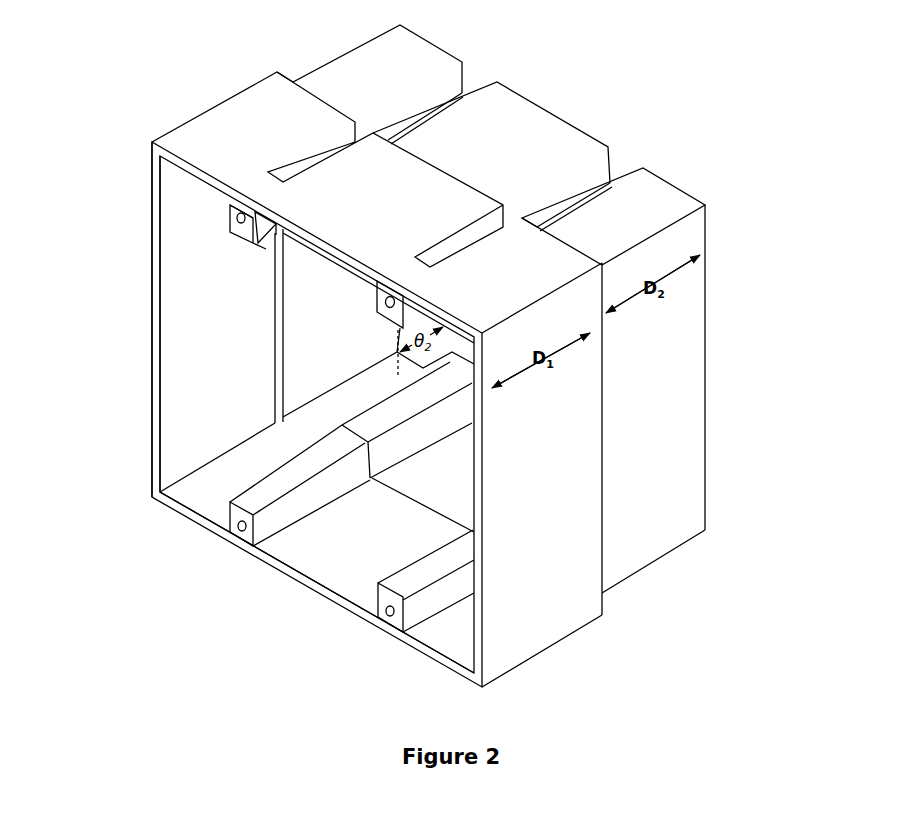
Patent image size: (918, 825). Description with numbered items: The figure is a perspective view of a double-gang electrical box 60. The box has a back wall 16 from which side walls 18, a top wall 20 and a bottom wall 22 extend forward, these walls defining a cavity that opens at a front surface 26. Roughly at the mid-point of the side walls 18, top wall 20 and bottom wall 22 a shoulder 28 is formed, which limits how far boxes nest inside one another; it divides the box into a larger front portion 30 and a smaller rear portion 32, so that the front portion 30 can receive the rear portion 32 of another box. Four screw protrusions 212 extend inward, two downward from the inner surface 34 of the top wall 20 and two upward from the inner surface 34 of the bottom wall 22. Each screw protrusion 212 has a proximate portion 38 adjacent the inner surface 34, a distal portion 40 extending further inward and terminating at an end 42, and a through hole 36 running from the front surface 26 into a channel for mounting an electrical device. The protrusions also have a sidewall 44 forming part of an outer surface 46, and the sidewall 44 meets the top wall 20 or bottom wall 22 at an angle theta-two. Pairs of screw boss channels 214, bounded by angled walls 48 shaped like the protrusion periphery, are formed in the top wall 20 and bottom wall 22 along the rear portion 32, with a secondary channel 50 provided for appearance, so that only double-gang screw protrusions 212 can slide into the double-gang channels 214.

The double-gang electrical box 60 is at (119, 89).
The top wall 20 is at (214, 130).
The screw boss channels 214 is at (381, 125).
The angled walls 48 is at (446, 110).
The secondary channel 50 is at (306, 165).
The proximate portion 38 is at (231, 212).
The sidewall 44 is at (266, 222).
The distal portion 40 is at (229, 238).
The screw protrusions 212 is at (239, 242).
The through hole 36 is at (247, 224).
The outer surface 46 is at (265, 232).
The side walls 18 is at (148, 330).
The shoulder 28 is at (272, 329).
The front surface 26 is at (148, 391).
The inner surface 34 is at (183, 438).
The end 42 is at (281, 498).
The bottom wall 22 is at (346, 611).
The front portion 30 is at (518, 635).
The rear portion 32 is at (689, 389).
The back wall 16 is at (709, 480).